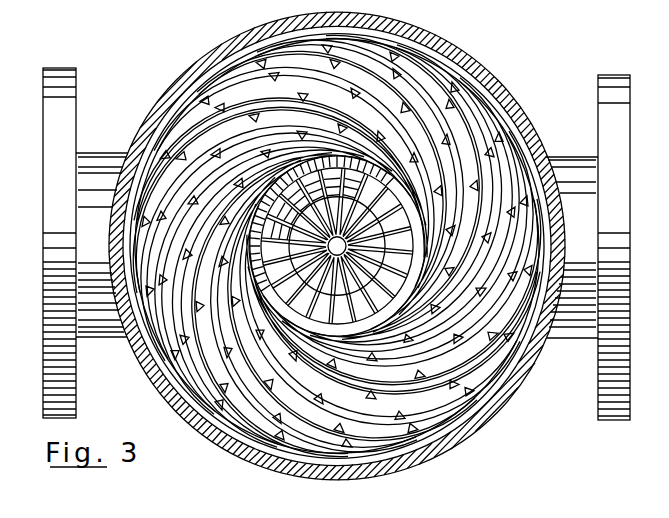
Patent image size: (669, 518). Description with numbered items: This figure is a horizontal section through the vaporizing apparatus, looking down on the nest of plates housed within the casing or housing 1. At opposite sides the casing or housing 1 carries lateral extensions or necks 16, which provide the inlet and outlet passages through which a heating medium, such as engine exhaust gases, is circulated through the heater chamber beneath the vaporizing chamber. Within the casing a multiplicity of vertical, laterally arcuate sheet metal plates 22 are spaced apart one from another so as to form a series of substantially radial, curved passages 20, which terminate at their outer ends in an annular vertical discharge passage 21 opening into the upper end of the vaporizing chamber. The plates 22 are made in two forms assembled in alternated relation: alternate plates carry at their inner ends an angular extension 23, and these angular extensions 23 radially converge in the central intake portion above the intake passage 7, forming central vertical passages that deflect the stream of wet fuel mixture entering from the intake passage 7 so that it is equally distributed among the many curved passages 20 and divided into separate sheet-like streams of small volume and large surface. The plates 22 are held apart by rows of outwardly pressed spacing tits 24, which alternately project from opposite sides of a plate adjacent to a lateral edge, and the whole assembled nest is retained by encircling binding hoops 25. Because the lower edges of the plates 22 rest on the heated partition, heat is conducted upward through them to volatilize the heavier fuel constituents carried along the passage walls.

The casing or housing 1 is at (148, 118).
The intake passage 7 is at (355, 305).
The lateral extensions or necks 16 is at (107, 160).
The curved passages 20 is at (388, 94).
The annular vertical discharge passage 21 is at (512, 108).
The sheet metal plates 22 is at (186, 82).
The angular extension 23 is at (401, 272).
The spacing tits 24 is at (470, 110).
The binding hoops 25 is at (512, 132).